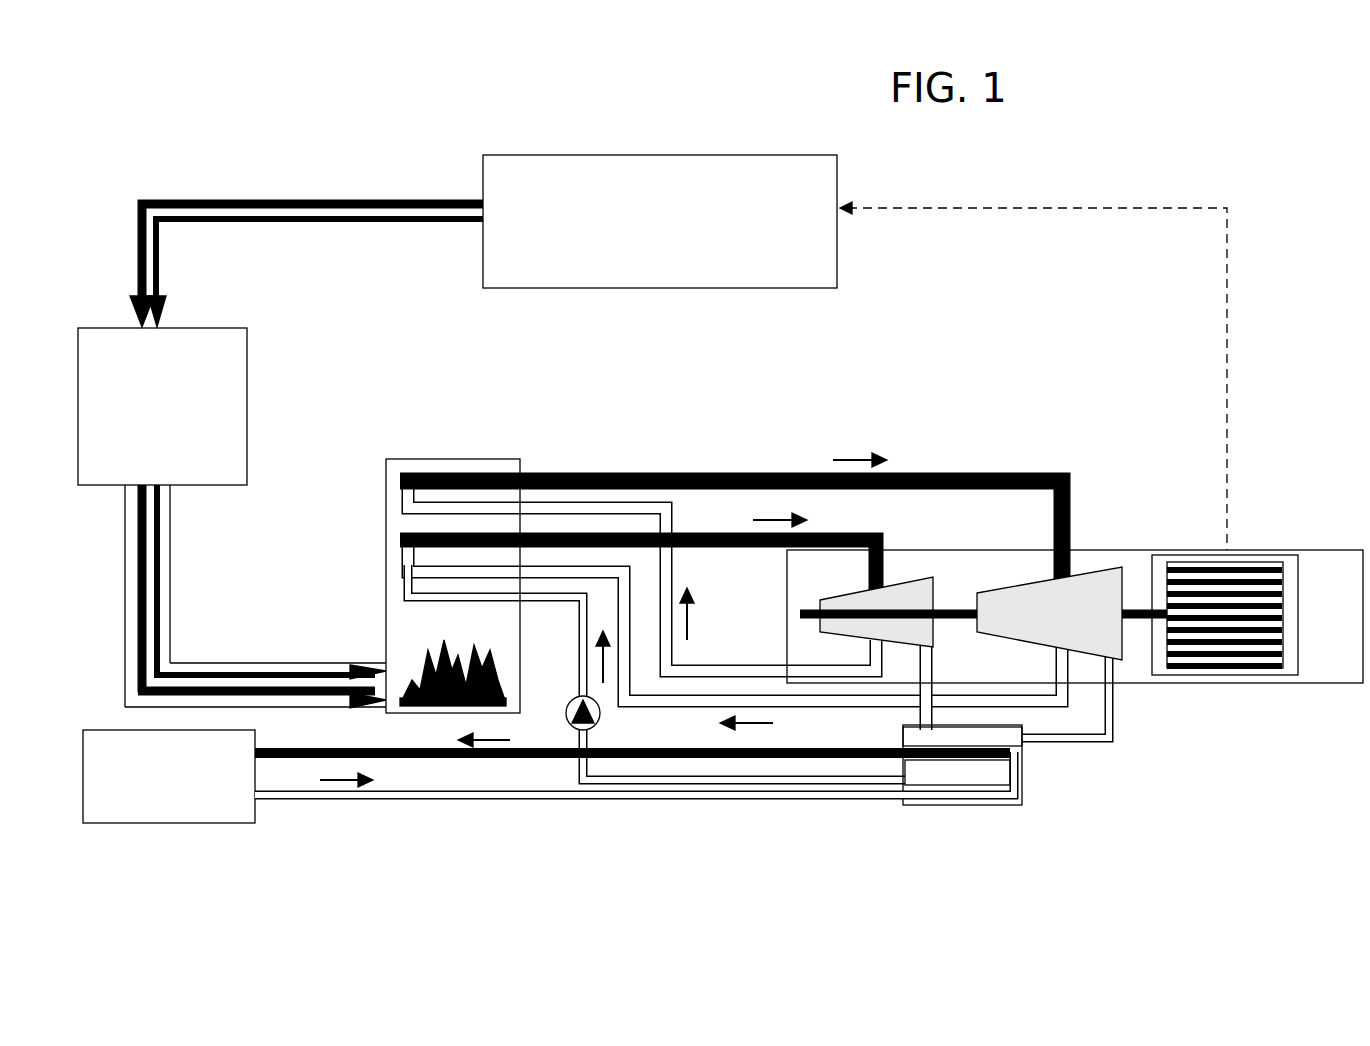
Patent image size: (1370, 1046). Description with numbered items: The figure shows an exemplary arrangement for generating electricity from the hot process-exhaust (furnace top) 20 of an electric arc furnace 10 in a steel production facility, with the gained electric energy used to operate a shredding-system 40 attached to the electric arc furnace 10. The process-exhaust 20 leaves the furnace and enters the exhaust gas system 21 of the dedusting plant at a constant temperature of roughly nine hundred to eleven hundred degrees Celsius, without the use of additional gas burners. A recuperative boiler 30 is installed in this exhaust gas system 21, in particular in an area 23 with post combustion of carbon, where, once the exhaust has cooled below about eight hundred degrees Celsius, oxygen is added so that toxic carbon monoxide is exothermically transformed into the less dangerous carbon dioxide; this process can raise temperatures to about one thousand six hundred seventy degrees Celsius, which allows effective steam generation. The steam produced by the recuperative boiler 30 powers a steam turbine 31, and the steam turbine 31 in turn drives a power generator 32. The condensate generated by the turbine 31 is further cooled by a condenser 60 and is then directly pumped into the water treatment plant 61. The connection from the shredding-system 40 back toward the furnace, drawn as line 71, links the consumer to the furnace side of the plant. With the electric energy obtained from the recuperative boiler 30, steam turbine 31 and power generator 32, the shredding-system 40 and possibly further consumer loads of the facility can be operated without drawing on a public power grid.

The electric arc furnace 10 is at (249, 405).
The process-exhaust (furnace top) 20 is at (298, 685).
The exhaust gas system 21 is at (188, 620).
The area with post combustion of carbon 23 is at (495, 662).
The recuperative boiler 30 is at (456, 470).
The steam turbine 31 is at (1010, 602).
The power generator 32 is at (1221, 655).
The shredding-system 40 is at (668, 180).
The condenser 60 is at (958, 770).
The water treatment plant 61 is at (176, 800).
The supply line from unit 40 71 is at (330, 200).